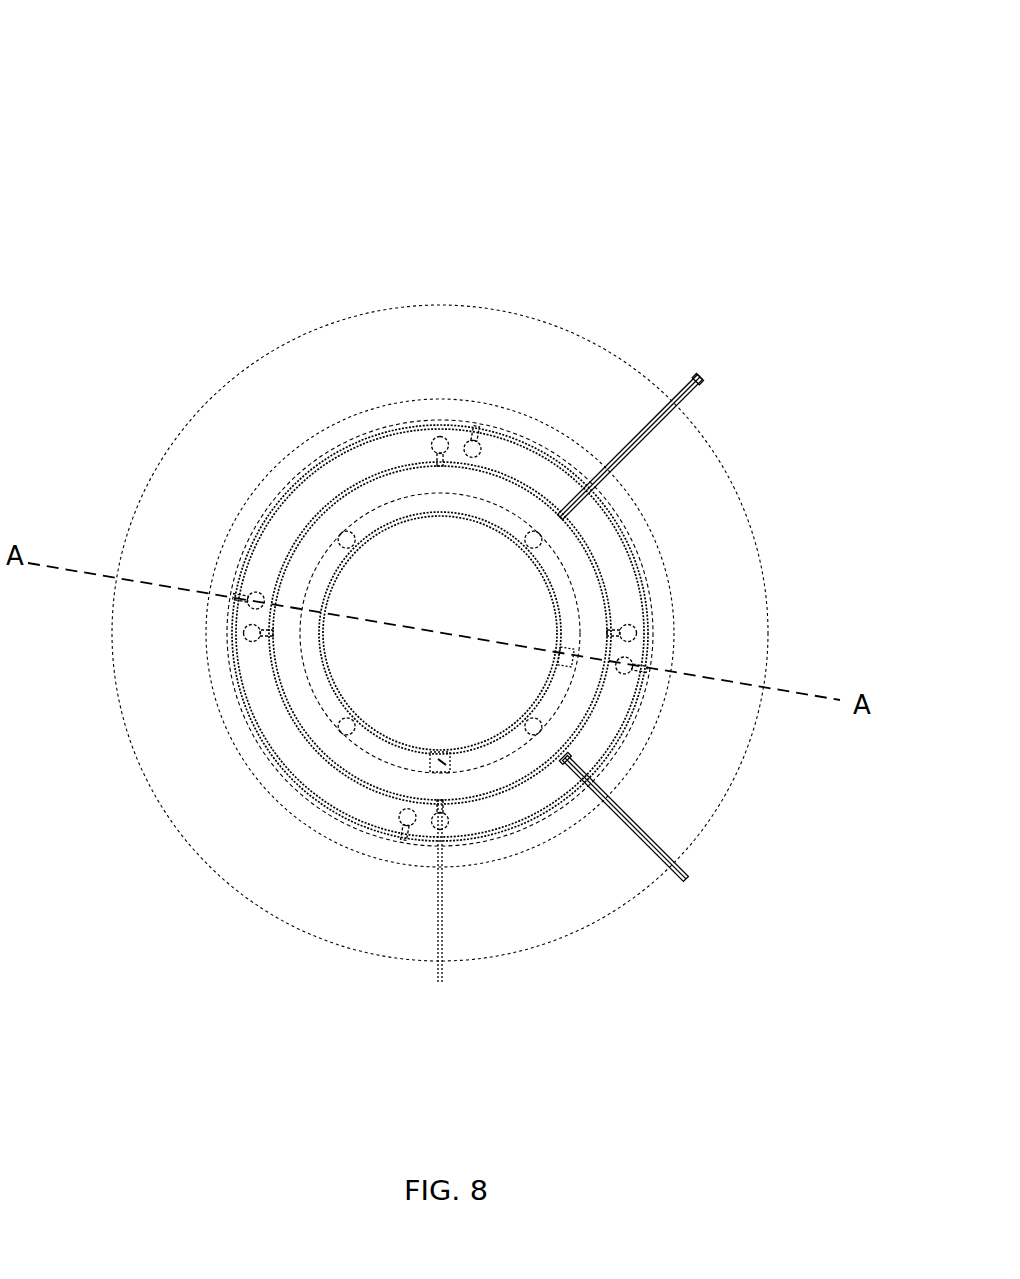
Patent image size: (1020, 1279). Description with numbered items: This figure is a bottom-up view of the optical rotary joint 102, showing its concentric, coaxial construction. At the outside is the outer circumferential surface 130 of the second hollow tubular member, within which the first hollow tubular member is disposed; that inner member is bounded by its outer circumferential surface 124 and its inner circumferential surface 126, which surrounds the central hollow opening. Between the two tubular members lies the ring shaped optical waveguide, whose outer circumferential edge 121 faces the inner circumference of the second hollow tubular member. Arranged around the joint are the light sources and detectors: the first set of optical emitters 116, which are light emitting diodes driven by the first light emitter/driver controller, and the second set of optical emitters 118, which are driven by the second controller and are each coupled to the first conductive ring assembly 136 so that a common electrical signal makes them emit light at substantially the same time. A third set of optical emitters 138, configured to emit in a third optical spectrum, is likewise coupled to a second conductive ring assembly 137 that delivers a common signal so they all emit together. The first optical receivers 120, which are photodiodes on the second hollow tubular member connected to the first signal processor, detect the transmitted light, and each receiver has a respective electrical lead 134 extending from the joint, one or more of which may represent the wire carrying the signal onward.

The optical rotary joint 102 is at (131, 80).
The first set of optical emitters 116 is at (343, 540).
The second set of optical emitters 118 is at (437, 437).
The first optical receivers 120 is at (445, 765).
The outer circumferential edge 121 is at (212, 712).
The outer circumferential surface 124 is at (520, 745).
The inner circumferential surface 126 is at (556, 590).
The outer circumferential surface 130 is at (245, 363).
The electrical leads 134 is at (698, 378).
The first conductive ring assembly 136 is at (312, 742).
The second conductive ring assembly 137 is at (322, 810).
The third set of optical emitters 138 is at (470, 437).